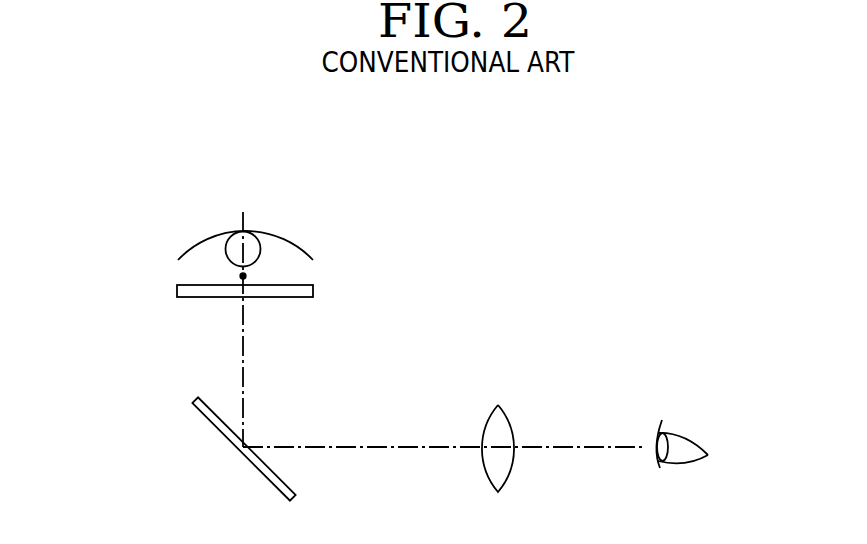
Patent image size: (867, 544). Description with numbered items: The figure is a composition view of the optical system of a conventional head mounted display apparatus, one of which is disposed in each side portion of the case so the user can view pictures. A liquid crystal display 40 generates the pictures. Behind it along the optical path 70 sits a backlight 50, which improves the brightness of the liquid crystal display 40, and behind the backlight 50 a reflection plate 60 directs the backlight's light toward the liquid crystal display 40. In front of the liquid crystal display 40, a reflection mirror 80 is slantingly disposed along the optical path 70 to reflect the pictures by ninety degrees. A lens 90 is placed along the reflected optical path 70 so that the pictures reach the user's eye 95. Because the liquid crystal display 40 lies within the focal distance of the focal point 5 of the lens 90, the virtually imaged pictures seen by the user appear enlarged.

The focal point 5 is at (247, 276).
The liquid crystal display 40 is at (178, 292).
The backlight 50 is at (226, 248).
The reflection plate 60 is at (213, 235).
The optical path 70 is at (243, 370).
The reflection mirror 80 is at (235, 445).
The lens 90 is at (503, 425).
The user's eye 95 is at (687, 437).